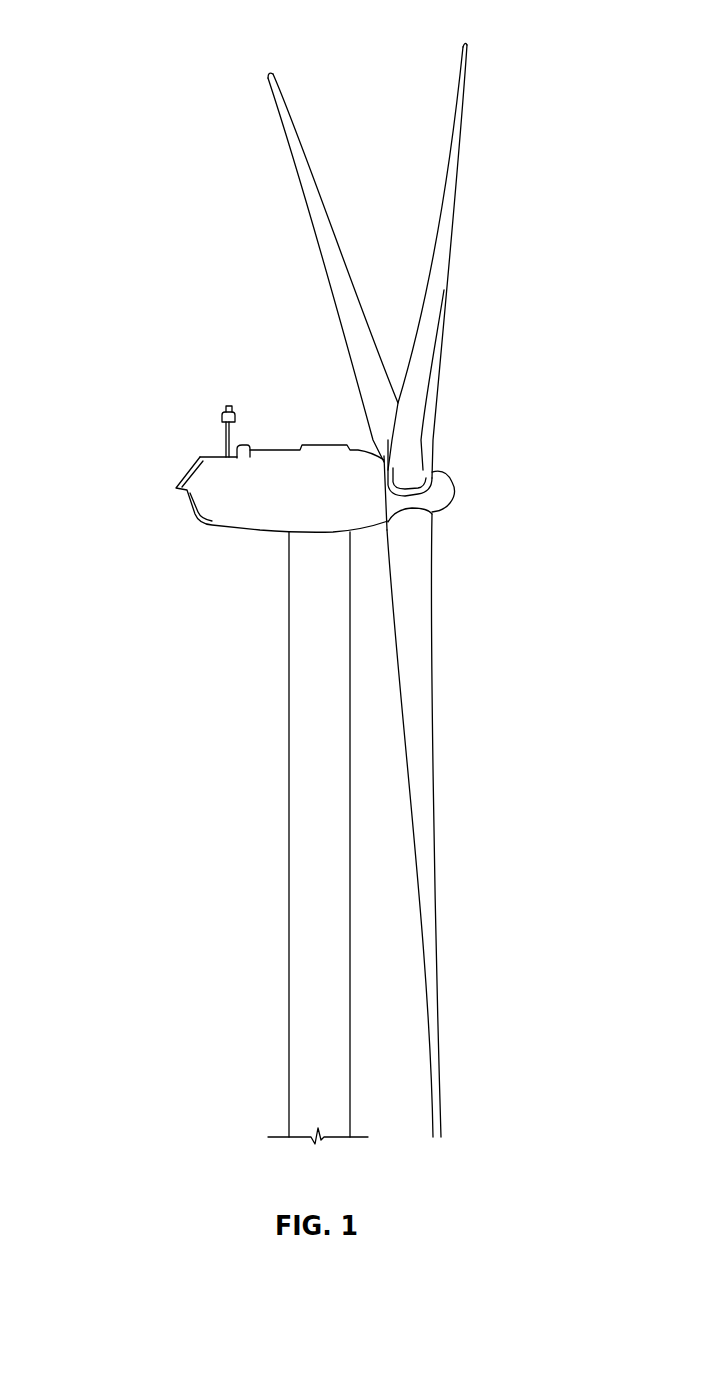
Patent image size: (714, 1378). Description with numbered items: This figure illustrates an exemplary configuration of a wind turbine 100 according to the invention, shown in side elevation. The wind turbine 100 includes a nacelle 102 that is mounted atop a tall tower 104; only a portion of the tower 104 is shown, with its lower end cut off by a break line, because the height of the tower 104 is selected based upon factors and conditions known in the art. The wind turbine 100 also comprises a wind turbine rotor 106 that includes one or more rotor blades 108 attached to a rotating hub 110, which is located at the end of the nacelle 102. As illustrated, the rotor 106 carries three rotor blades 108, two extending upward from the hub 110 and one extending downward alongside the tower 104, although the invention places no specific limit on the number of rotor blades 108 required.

The wind turbine 100 is at (126, 44).
The nacelle 102 is at (219, 530).
The tower 104 is at (289, 773).
The wind turbine rotor 106 is at (514, 290).
The rotor blades 108 is at (290, 112).
The rotating hub 110 is at (456, 490).